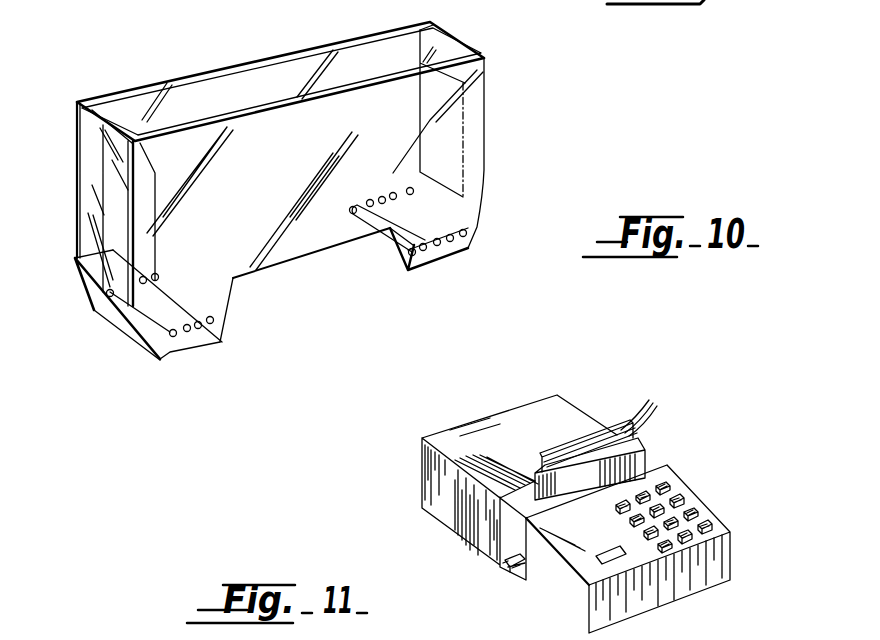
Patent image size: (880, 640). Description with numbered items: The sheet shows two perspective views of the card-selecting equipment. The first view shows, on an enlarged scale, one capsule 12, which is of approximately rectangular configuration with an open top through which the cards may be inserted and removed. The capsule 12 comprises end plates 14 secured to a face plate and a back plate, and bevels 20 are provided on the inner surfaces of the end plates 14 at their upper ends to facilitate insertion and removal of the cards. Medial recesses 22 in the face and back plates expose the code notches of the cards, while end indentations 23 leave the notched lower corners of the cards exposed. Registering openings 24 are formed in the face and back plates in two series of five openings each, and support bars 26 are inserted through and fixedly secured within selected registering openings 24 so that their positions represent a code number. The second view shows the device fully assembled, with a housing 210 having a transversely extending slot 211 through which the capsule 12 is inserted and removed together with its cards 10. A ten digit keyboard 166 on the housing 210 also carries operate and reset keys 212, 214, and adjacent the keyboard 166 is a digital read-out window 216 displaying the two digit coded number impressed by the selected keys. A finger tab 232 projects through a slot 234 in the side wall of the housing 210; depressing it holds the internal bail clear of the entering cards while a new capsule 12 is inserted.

In FIG. 10, the capsule 12 is at (227, 58).
In FIG. 11, the capsule 12 is at (660, 441).
In FIG. 10, the end plates 14 is at (90, 184).
In FIG. 10, the bevels 20 is at (447, 52).
In FIG. 10, the medial recesses 22 is at (313, 257).
In FIG. 10, the end indentations 23 is at (81, 292).
In FIG. 10, the registering openings 24 is at (188, 326).
In FIG. 10, the support bars 26 is at (201, 328).
In FIG. 11, the housing 210 is at (560, 410).
In FIG. 11, the cards 10 is at (641, 402).
In FIG. 11, the slot 211 is at (548, 537).
In FIG. 11, the reset key 214 is at (705, 526).
In FIG. 11, the keyboard 166 is at (679, 496).
In FIG. 11, the operate key 212 is at (692, 545).
In FIG. 11, the digital read-out window 216 is at (617, 558).
In FIG. 11, the finger tab 232 is at (500, 567).
In FIG. 11, the slot 234 is at (519, 573).